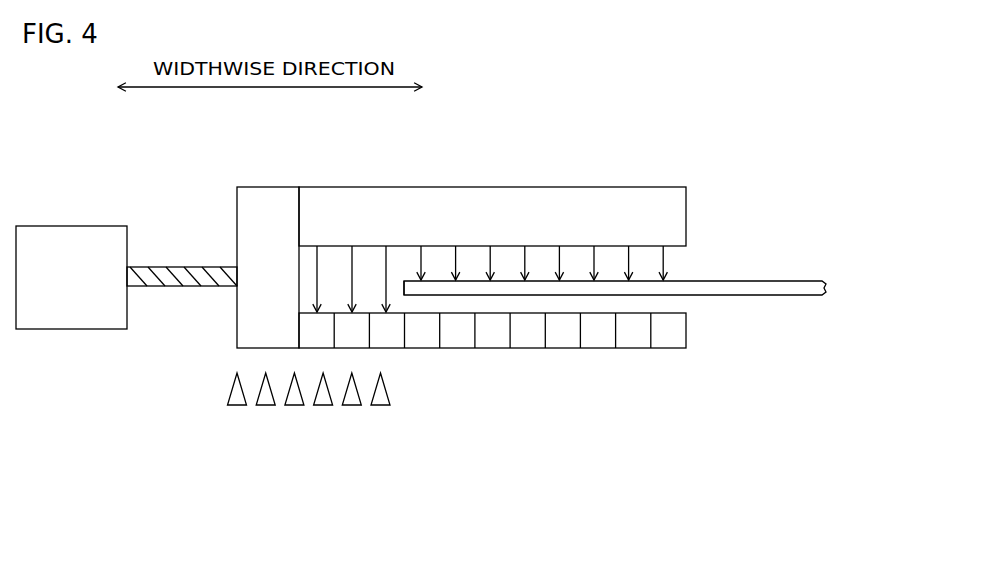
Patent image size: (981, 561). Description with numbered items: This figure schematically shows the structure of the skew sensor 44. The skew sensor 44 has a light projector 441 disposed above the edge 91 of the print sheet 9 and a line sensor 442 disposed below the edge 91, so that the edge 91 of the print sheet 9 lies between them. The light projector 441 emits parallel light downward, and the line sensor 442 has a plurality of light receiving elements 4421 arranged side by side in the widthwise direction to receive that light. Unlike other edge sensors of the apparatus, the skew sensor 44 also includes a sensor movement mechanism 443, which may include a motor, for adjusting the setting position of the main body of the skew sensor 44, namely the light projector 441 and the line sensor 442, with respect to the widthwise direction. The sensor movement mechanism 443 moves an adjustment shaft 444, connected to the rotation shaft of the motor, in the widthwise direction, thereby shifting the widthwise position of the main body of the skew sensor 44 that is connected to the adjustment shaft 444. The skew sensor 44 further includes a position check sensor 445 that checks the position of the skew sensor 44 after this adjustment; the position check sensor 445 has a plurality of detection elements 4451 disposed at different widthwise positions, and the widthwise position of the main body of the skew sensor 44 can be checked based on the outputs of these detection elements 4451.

The skew sensor 44 is at (709, 143).
The light projector 441 is at (452, 187).
The line sensor 442 is at (588, 408).
The light receiving elements 4421 is at (600, 335).
The sensor movement mechanism 443 is at (50, 226).
The adjustment shaft 444 is at (143, 267).
The position check sensor 445 is at (319, 457).
The detection elements 4451 is at (325, 406).
The print sheet 9 is at (762, 281).
The edge 91 is at (404, 289).